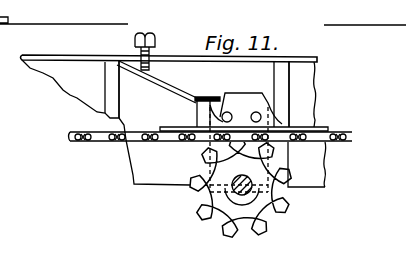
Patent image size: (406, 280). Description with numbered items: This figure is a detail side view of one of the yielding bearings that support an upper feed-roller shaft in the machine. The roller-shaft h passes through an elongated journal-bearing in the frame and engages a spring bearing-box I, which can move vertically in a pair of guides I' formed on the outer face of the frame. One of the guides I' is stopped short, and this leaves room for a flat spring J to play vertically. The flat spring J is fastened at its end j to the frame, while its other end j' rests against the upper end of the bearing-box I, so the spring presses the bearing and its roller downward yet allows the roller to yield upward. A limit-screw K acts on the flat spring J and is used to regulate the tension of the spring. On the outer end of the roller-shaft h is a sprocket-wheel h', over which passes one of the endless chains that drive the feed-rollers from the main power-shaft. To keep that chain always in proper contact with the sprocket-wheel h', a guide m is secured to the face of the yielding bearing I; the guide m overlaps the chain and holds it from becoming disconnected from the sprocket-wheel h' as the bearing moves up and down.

The spring bearing-box I is at (175, 121).
The guide I' is at (108, 122).
The end of flat spring j is at (111, 75).
The limit-screw K is at (152, 38).
The flat spring J is at (188, 91).
The end of flat spring j' is at (207, 99).
The guide m is at (246, 108).
The roller-shaft h is at (240, 186).
The sprocket-wheel h' is at (239, 156).